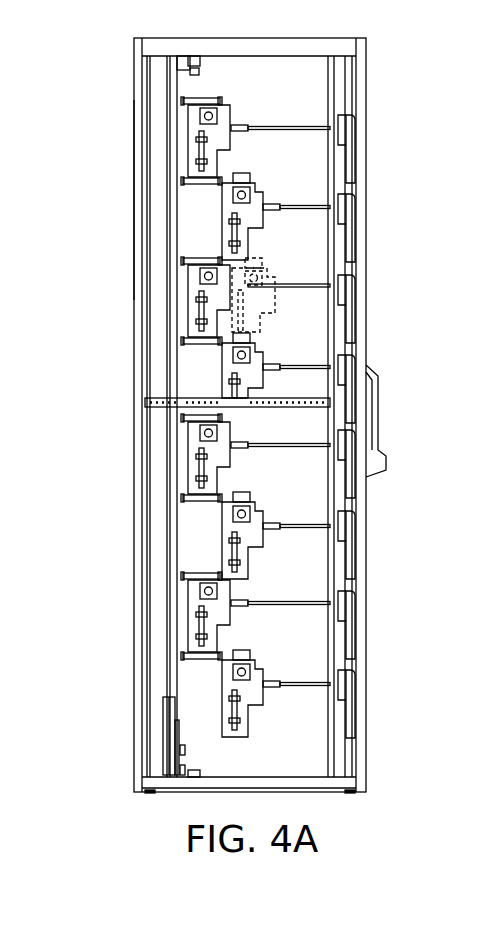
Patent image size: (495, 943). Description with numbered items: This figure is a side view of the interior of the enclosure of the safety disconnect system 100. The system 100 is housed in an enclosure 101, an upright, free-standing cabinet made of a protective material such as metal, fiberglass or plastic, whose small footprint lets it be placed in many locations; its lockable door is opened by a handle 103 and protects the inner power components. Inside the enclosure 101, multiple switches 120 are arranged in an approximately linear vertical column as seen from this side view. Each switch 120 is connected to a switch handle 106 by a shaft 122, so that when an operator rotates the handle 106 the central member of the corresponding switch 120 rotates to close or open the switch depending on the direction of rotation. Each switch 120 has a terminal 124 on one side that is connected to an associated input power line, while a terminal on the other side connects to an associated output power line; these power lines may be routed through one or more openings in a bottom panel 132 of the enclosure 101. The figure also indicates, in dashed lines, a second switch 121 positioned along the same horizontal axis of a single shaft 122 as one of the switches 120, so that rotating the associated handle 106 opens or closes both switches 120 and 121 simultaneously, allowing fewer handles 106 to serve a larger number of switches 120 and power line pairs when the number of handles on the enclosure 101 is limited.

The safety disconnect system 100 is at (122, 72).
The enclosure 101 is at (138, 192).
The handle 103 is at (378, 420).
The switch handle 106 is at (350, 137).
The switch 120 is at (246, 183).
The second switch 121 is at (262, 313).
The shaft 122 is at (316, 131).
The terminal 124 is at (205, 275).
The bottom panel 132 is at (280, 780).